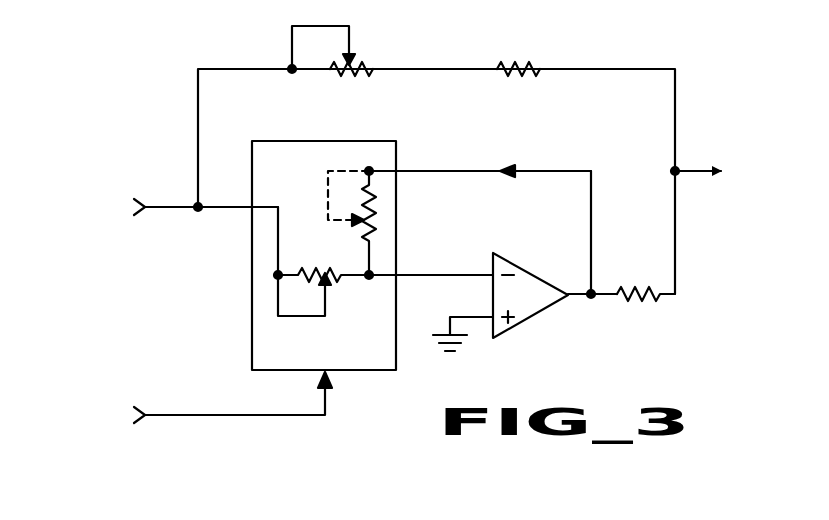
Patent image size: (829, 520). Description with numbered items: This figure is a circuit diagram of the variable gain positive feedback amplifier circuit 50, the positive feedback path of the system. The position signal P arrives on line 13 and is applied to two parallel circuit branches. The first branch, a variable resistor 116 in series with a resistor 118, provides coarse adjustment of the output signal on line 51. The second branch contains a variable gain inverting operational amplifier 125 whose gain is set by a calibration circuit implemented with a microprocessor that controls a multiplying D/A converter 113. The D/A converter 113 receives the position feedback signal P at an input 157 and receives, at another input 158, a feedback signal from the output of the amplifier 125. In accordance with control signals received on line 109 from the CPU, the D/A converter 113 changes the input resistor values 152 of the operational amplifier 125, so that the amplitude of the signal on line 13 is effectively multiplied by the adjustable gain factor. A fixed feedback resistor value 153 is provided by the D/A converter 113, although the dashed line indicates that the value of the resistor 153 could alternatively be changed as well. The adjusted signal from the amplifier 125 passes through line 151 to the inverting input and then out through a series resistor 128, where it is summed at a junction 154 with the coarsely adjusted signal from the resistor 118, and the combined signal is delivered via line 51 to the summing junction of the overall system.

The variable gain positive feedback amplifier circuit 50 is at (175, 46).
The variable resistor 116 is at (355, 60).
The resistor 118 is at (520, 63).
The line 13 is at (165, 205).
The input 157 is at (246, 211).
The multiplying D/A converter 113 is at (343, 141).
The input resistor 152 is at (312, 250).
The fixed feedback resistor 153 is at (372, 220).
The input 158 is at (398, 171).
The input line to amplifier 151 is at (418, 275).
The variable gain inverting operational amplifier 125 is at (540, 310).
The junction 154 is at (668, 171).
The line 51 is at (698, 166).
The series resistor 128 is at (645, 300).
The line 109 is at (170, 418).